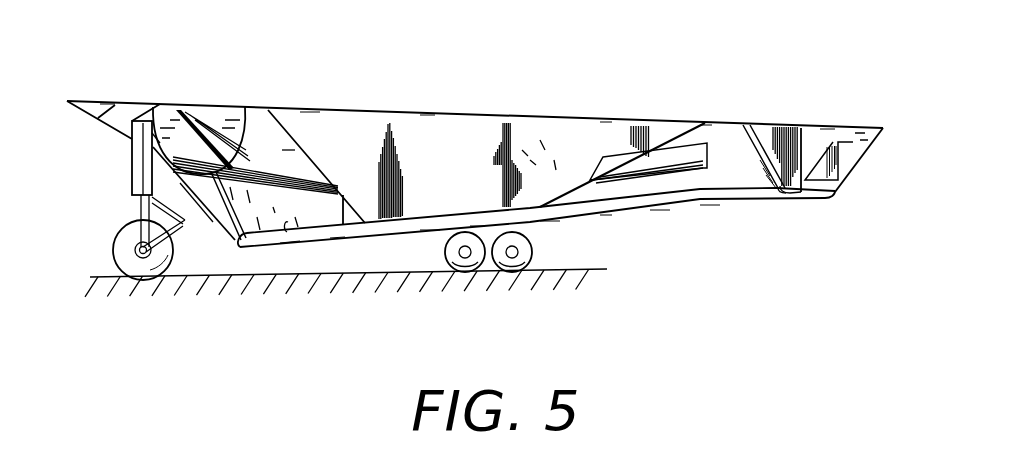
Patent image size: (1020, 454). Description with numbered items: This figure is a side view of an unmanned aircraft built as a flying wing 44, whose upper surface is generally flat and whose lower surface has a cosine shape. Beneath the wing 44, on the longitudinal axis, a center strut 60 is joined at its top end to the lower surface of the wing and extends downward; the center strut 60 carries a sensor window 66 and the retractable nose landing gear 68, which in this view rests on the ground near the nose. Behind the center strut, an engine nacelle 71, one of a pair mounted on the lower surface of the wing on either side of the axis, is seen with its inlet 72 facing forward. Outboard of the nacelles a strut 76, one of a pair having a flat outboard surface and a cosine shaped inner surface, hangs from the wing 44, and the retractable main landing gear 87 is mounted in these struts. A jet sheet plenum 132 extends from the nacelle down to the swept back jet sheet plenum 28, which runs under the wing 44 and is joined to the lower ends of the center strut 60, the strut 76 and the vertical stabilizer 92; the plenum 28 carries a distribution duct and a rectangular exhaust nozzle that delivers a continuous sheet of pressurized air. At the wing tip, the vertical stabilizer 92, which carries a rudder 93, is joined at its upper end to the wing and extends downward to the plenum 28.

The flying wing 44 is at (397, 98).
The sensor window 66 is at (124, 117).
The retractable nose landing gear 68 is at (122, 228).
The center strut 60 is at (218, 223).
The inlets 72 is at (218, 117).
The engine nacelle 71 is at (258, 137).
The jet sheet plenum 132 is at (300, 212).
The swept back jet sheet plenum 28 is at (398, 222).
The strut 76 is at (533, 142).
The vertical stabilizer 92 is at (808, 143).
The rudders 93 is at (840, 165).
The retractable main landing gear 87 is at (530, 257).